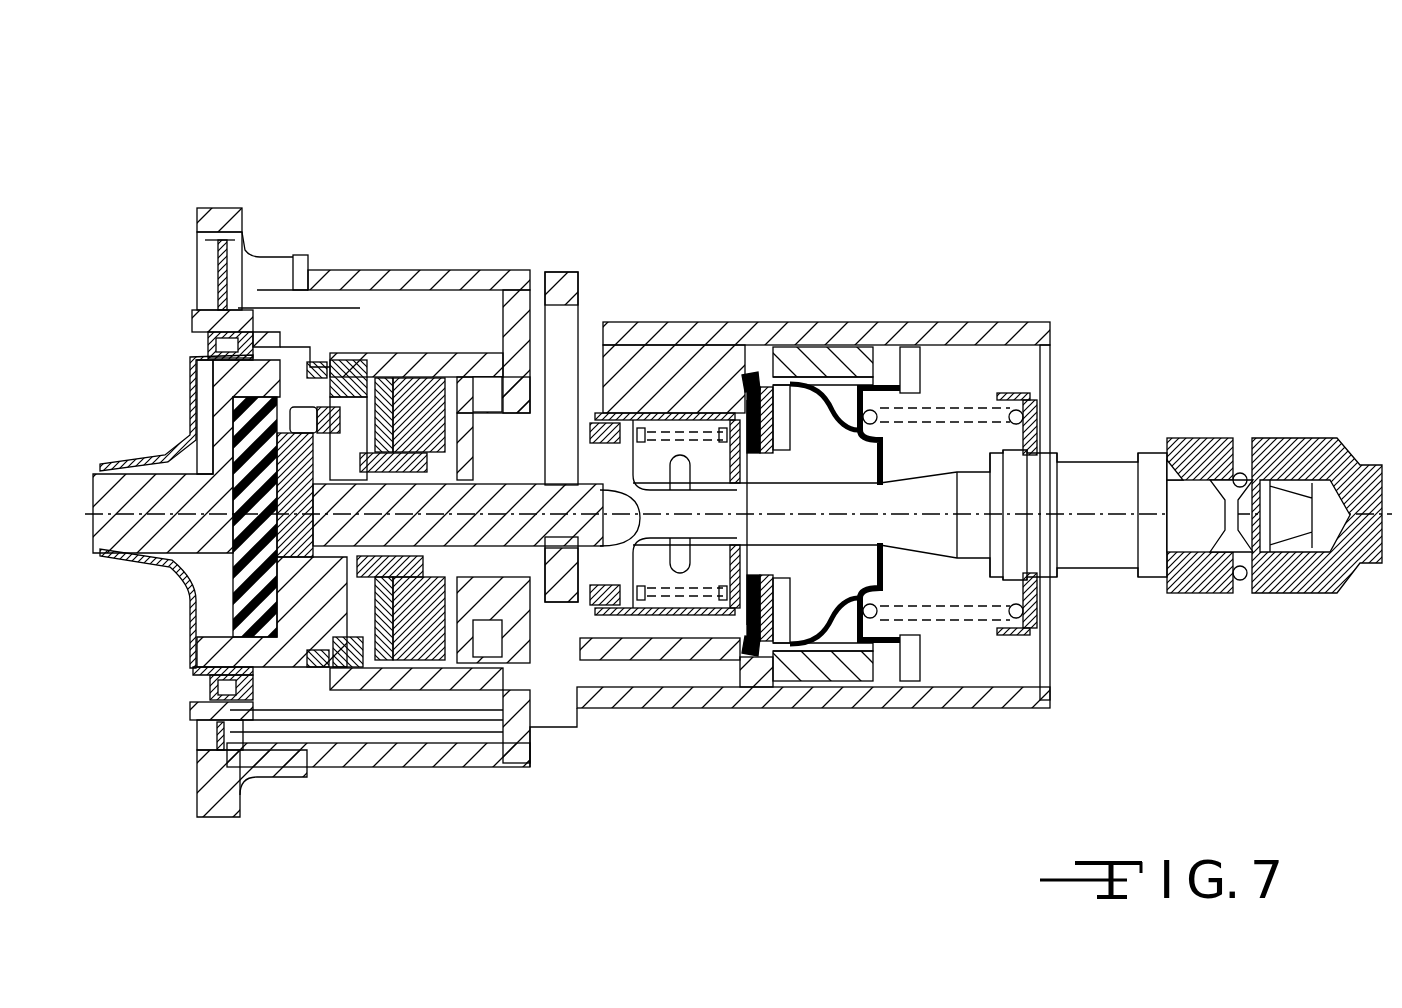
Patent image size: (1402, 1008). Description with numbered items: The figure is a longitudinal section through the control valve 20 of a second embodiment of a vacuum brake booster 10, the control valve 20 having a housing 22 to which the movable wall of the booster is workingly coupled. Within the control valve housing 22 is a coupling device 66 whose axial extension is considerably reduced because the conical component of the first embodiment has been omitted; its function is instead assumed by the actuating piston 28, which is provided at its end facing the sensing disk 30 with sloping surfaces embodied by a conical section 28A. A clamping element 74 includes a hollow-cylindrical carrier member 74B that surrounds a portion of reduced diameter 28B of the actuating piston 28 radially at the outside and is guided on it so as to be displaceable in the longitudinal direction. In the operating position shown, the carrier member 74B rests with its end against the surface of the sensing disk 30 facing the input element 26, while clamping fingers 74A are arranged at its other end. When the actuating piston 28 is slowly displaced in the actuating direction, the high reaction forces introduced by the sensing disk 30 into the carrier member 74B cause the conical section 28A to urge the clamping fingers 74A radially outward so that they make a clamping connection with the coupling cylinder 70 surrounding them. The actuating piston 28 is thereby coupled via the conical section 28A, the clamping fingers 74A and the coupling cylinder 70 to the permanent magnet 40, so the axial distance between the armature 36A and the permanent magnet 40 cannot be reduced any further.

The vacuum brake booster 10 is at (1230, 176).
The control valve 20 is at (854, 222).
The control valve housing 22 is at (962, 330).
The input element 26 is at (1090, 492).
The actuating piston 28 is at (632, 422).
The conical section 28A is at (430, 532).
The portion of reduced diameter 28B is at (345, 540).
The sensing disk 30 is at (285, 478).
The armature 36A is at (550, 420).
The permanent magnet 40 is at (440, 374).
The coupling device 66 is at (326, 449).
The coupling cylinder 70 is at (396, 376).
The clamping element 74 is at (340, 372).
The clamping fingers 74A is at (350, 392).
The hollow-cylindrical carrier member 74B is at (310, 550).